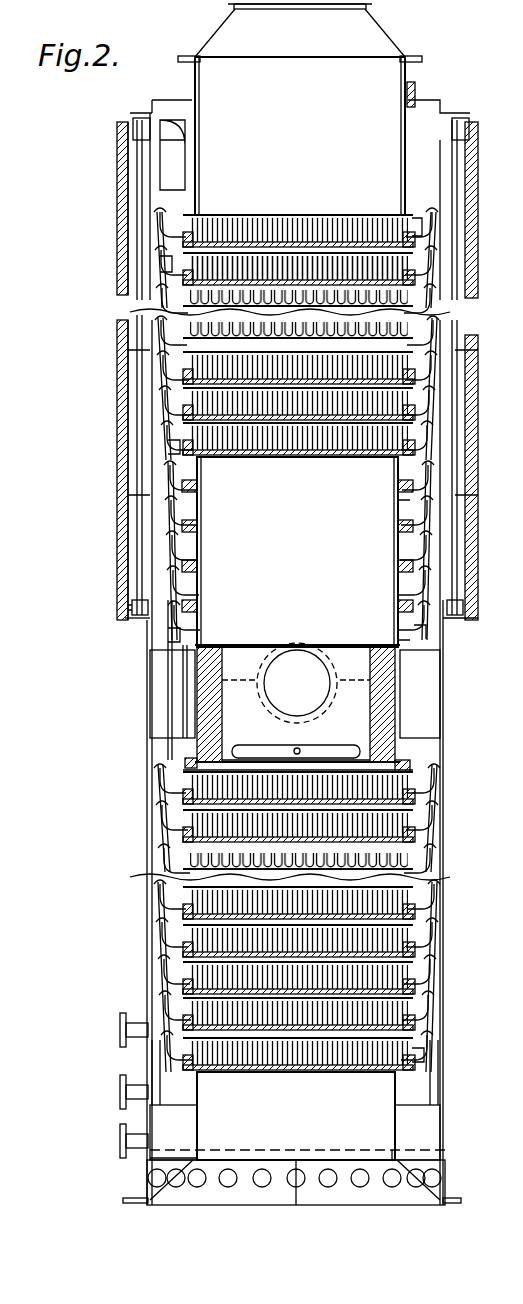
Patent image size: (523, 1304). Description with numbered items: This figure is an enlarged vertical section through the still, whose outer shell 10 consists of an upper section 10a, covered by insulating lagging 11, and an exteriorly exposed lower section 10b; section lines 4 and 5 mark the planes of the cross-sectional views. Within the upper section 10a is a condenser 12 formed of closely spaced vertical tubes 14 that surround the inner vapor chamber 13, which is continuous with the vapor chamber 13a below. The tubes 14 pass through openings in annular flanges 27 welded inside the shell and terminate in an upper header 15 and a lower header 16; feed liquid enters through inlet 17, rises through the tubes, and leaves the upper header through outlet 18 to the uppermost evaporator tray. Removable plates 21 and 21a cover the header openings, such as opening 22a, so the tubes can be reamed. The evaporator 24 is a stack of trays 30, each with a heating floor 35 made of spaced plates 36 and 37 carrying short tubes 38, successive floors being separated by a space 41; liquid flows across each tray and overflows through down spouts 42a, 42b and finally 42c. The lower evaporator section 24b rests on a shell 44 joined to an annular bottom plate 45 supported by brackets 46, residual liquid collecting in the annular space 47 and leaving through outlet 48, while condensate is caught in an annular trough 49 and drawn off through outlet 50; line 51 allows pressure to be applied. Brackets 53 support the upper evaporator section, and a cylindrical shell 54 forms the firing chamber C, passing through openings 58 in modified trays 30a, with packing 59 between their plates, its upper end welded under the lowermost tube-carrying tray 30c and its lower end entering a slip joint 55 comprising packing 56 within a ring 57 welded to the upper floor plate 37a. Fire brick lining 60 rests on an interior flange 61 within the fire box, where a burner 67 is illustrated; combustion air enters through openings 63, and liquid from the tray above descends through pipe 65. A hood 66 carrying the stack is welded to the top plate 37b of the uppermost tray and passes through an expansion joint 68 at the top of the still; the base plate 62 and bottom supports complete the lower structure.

The section line 4- 4 is at (97, 140).
The section line 5- 5 is at (97, 598).
The shell 10 is at (109, 532).
The upper shell section 10a is at (117, 424).
The lower shell section 10b is at (152, 868).
The lagging 11 is at (117, 472).
The condenser 12 is at (136, 232).
The vapor chamber 13 is at (442, 276).
The vapor chamber 13a is at (438, 886).
The condenser tubes 14 is at (140, 312).
The upper header 15 is at (470, 126).
The lower header 16 is at (137, 626).
The inlet 17 is at (130, 620).
The outlet 18 is at (176, 166).
The removable plate 21 is at (144, 120).
The removable plate 21a is at (140, 636).
The opening 22a is at (456, 644).
The evaporator 24 is at (149, 412).
The lower evaporator section 24b is at (440, 962).
The annular flanges 27 is at (140, 350).
The trays 30 is at (158, 240).
The trays 30a is at (426, 632).
The lowermost tube carrying tray 30c is at (176, 446).
The heating floor 35 is at (296, 232).
The plate 36 is at (356, 338).
The plate 37 is at (308, 470).
The upper floor plate 37a is at (182, 780).
The top plate 37b is at (346, 216).
The tubes 38 is at (292, 328).
The space 41 is at (202, 386).
The down spout 42a is at (420, 236).
The down spout 42b is at (172, 270).
The down spout 42c is at (178, 630).
The shell 44 is at (198, 1114).
The annular bottom plate 45 is at (416, 1161).
The brackets 46 is at (168, 1160).
The annular space 47 is at (482, 1118).
The outlet 48 is at (113, 1148).
The annular trough 49 is at (156, 1062).
The outlet 50 is at (134, 1088).
The line 51 is at (117, 1030).
The brackets 53 is at (160, 666).
The cylindrical shell 54 is at (197, 557).
The expansion joint 55 is at (412, 772).
The annular packing 56 is at (186, 764).
The ring 57 is at (192, 766).
The openings 58 is at (396, 524).
The packing 59 is at (198, 536).
The fire brick lining 60 is at (218, 658).
The interior annular flange 61 is at (224, 756).
The base plate 62 is at (292, 1182).
The openings 63 is at (246, 1156).
The pipe 65 is at (172, 690).
The hood 66 is at (300, 135).
The burner 67 is at (322, 747).
The expansion joint 68 is at (416, 90).
The firing chamber C is at (296, 683).